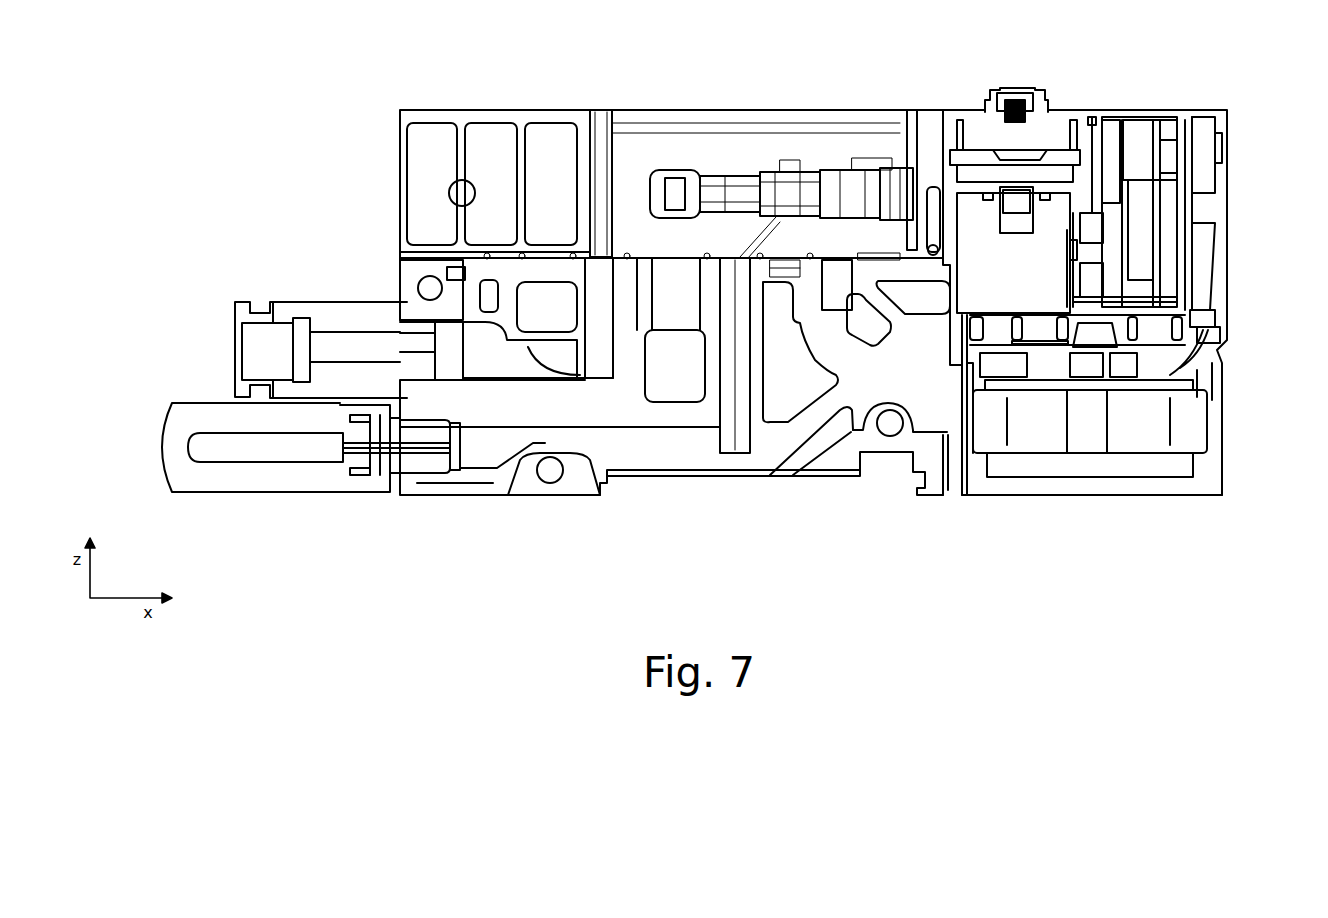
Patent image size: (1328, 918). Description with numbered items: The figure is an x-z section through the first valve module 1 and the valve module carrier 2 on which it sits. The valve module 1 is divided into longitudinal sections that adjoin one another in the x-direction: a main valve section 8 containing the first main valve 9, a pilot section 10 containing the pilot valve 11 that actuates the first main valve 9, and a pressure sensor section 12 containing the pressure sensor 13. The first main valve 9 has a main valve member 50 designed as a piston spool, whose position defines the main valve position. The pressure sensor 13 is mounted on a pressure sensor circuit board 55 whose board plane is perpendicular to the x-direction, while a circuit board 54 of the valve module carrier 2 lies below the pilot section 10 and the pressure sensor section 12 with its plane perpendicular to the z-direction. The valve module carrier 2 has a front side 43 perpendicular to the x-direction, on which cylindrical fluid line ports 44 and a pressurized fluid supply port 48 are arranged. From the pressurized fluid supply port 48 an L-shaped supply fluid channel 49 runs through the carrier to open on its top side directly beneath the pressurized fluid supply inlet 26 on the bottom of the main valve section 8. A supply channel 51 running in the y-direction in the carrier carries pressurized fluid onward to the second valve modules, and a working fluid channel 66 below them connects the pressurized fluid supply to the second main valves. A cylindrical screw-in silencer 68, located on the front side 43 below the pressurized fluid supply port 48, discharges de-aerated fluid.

The valve module 1 is at (1262, 198).
The valve module carrier 2 is at (1258, 413).
The main valve section 8 is at (497, 117).
The first main valve 9 is at (687, 118).
The pilot section 10 is at (972, 117).
The pilot valve 11 is at (1058, 117).
The pressure sensor section 12 is at (1187, 117).
The pressure sensor 13 is at (1136, 118).
The pressurized fluid supply inlet 26 is at (612, 118).
The front side 43 is at (360, 307).
The fluid line ports 44 is at (321, 307).
The pressurized fluid supply port 48 is at (313, 308).
The supply fluid channel 49 is at (505, 358).
The main valve member 50 is at (817, 118).
The supply channel 51 is at (910, 300).
The circuit board 54 is at (1146, 395).
The pressure sensor circuit board 55 is at (1152, 118).
The working fluid channel 66 is at (682, 390).
The silencer 68 is at (170, 450).